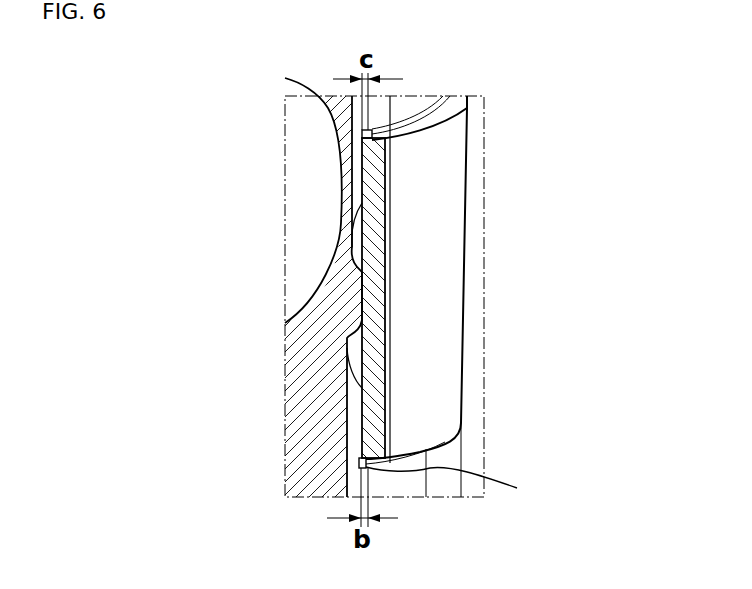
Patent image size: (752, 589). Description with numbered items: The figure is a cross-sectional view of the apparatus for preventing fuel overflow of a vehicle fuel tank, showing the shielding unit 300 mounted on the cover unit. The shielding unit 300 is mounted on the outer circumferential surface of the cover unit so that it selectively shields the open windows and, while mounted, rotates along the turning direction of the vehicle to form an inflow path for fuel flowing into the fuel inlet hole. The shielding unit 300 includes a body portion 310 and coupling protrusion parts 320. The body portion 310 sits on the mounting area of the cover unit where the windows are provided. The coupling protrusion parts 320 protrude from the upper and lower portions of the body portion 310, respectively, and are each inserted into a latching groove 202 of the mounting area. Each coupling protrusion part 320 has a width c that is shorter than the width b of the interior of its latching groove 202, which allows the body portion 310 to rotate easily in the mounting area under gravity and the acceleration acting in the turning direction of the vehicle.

The latching groove 202 is at (391, 283).
The shielding unit 300 is at (498, 236).
The body portion 310 is at (467, 163).
The coupling protrusion part 320 is at (362, 131).